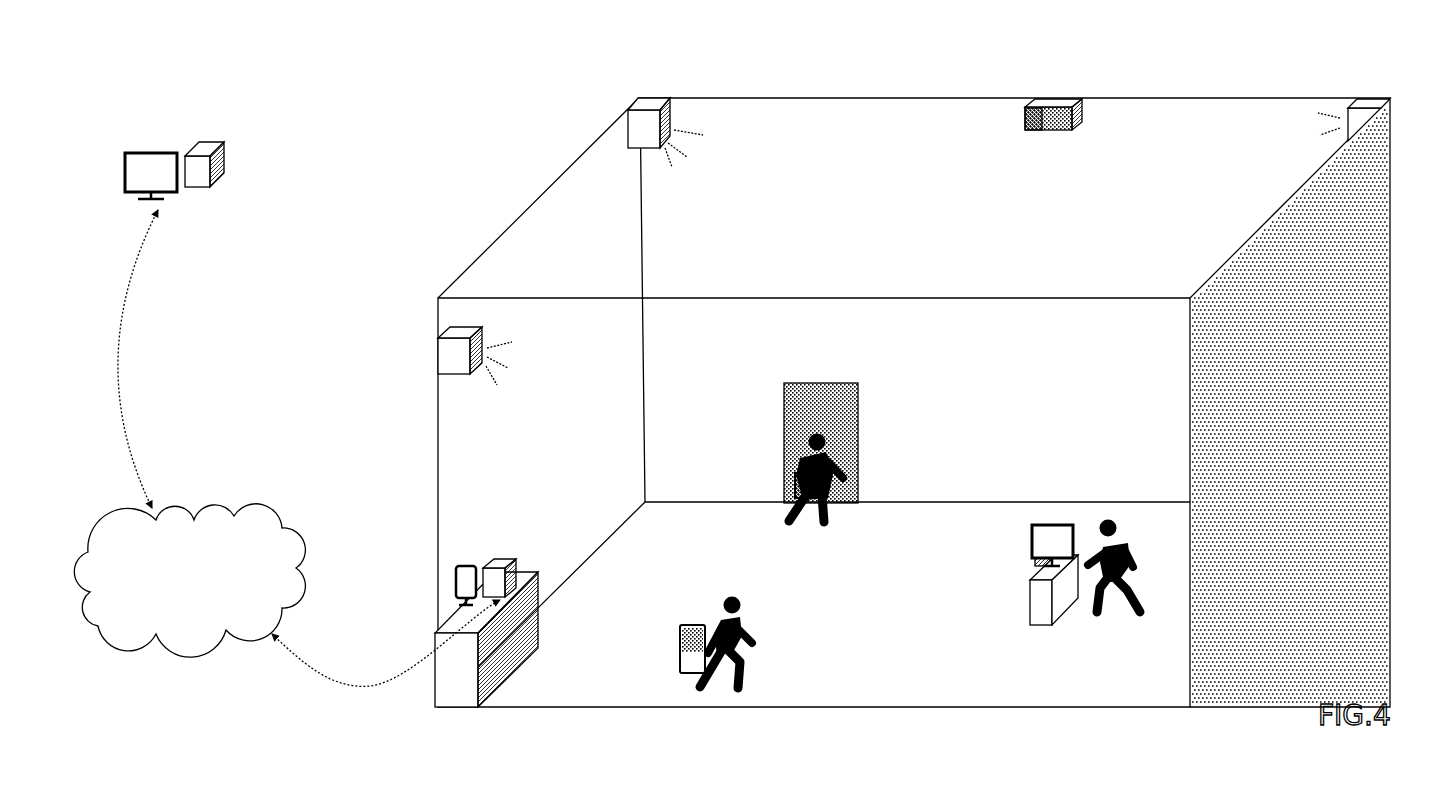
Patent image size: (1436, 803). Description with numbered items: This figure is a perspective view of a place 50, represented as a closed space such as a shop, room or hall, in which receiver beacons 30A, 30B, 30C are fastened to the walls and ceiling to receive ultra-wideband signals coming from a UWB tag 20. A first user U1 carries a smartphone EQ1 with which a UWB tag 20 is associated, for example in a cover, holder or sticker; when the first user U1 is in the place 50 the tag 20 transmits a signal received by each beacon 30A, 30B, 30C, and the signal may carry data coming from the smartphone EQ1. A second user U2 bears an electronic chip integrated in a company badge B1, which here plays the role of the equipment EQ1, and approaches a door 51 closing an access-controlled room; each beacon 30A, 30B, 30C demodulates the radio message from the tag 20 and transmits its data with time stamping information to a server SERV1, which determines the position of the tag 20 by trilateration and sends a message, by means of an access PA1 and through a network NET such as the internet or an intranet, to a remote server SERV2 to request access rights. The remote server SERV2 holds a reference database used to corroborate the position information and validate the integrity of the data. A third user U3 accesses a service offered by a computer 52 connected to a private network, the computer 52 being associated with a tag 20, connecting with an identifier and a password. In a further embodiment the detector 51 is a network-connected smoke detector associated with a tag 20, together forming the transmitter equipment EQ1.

The place 50 is at (878, 121).
The door 51 is at (1062, 106).
The UWB tag 20 is at (1030, 128).
The receiver beacon 30A is at (452, 355).
The receiver beacon 30B is at (633, 150).
The receiver beacon 30C is at (1365, 100).
The computer 52 is at (1057, 535).
The server SERV1 is at (500, 556).
The remote server SERV2 is at (158, 150).
The network NET is at (189, 580).
The access PA1 is at (457, 639).
The equipment EQ1 is at (680, 665).
The first user U1 is at (745, 662).
The user U2 is at (825, 448).
The user U3 is at (1128, 590).
The company badge B1 is at (825, 490).